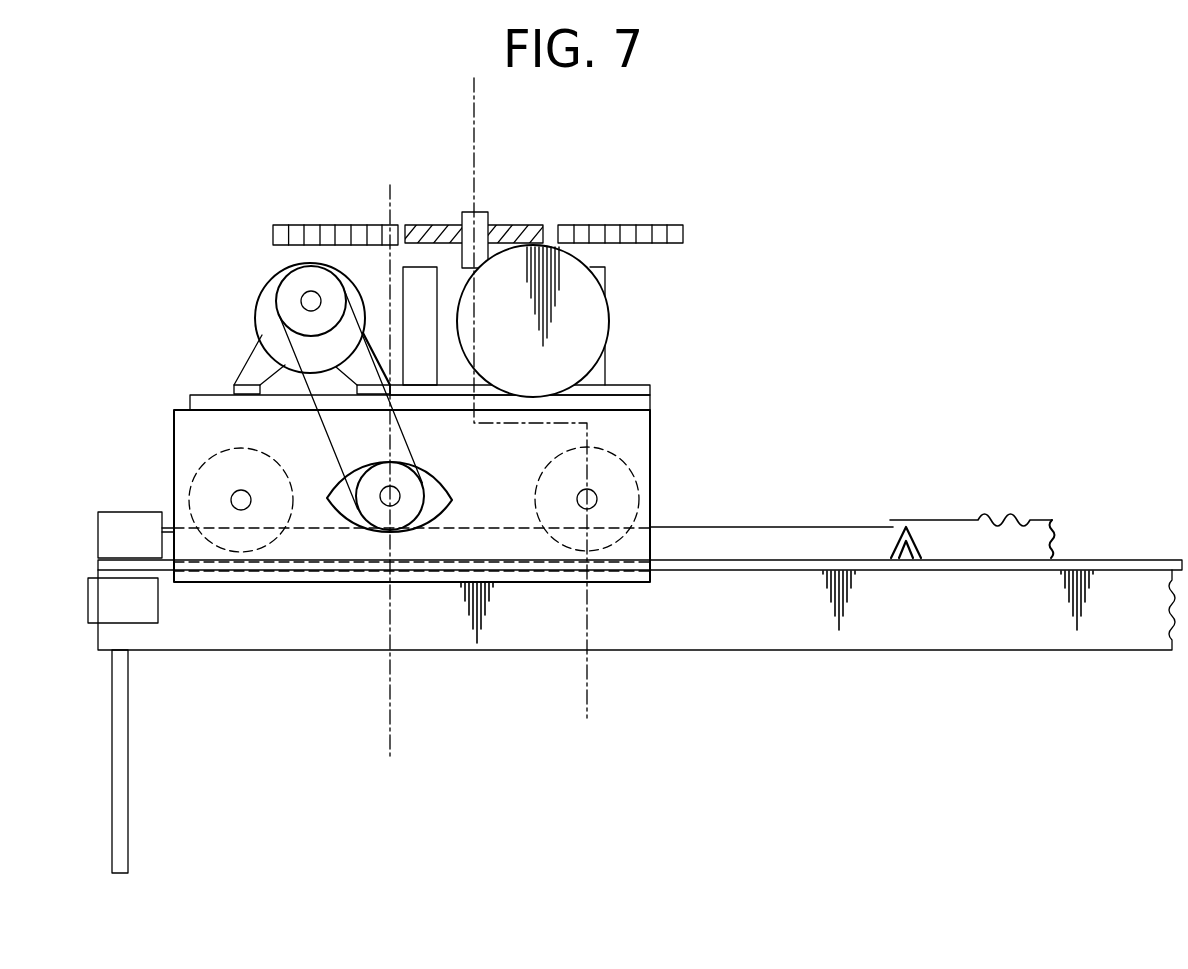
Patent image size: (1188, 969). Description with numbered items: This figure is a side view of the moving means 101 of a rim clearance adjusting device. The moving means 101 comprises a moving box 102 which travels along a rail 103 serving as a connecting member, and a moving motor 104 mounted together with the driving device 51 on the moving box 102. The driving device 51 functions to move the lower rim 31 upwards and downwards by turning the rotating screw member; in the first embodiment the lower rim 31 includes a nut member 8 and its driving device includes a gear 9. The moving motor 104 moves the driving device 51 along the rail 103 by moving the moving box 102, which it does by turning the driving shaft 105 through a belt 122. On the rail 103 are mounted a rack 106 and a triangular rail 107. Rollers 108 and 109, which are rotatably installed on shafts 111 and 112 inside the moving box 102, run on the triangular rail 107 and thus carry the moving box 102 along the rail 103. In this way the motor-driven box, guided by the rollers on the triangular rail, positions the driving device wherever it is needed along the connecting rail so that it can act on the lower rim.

The nut member 8 is at (478, 87).
The gear 9 is at (394, 197).
The lower rim 31 is at (670, 224).
The driving device 51 is at (530, 215).
The moving means 101 is at (894, 409).
The moving box 102 is at (673, 387).
The rail 103 is at (988, 493).
The moving motor 104 is at (265, 283).
The driving shaft 105 is at (400, 490).
The rack 106 is at (1053, 522).
The triangular rail 107 is at (880, 527).
The roller 108 is at (540, 476).
The roller 109 is at (192, 470).
The shaft 111 is at (598, 497).
The shaft 112 is at (231, 500).
The drive belt 122 is at (290, 345).